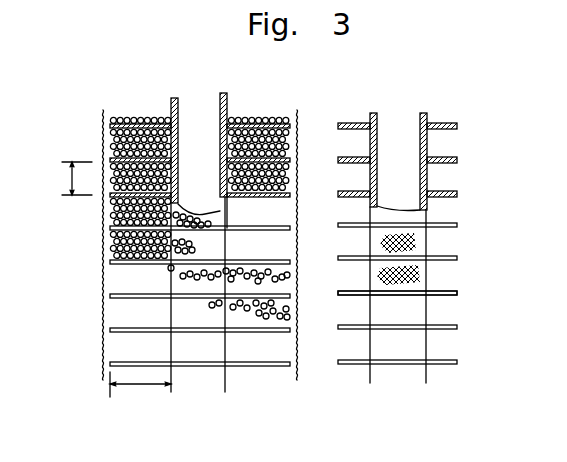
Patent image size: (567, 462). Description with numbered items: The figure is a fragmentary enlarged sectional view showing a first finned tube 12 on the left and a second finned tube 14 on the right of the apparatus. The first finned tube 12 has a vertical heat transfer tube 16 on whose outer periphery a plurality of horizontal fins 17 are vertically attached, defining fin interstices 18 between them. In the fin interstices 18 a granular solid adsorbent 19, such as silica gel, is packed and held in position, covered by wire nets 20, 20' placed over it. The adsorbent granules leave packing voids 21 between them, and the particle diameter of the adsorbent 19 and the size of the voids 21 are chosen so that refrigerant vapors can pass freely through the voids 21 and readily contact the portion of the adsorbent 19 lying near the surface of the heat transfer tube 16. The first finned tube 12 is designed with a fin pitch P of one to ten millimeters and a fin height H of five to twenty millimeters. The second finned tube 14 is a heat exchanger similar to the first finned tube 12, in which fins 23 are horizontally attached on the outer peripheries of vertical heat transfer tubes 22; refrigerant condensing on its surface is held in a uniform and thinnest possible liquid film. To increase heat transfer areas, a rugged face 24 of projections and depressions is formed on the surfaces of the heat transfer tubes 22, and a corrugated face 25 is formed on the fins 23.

The first finned tube 12 is at (93, 252).
The second finned tube 14 is at (460, 239).
The vertical heat transfer tube 16 is at (225, 100).
The horizontal fins 17 is at (127, 335).
The fin interstices 18 is at (132, 315).
The granular solid adsorbent 19 is at (110, 218).
The wire net 20 is at (119, 171).
The wire net 20' is at (284, 153).
The packing voids 21 is at (107, 260).
The vertical heat transfer tubes 22 is at (428, 113).
The fins 23 is at (438, 190).
The rugged face 24 is at (418, 275).
The corrugated face 25 is at (457, 297).
The pitch P is at (72, 177).
The height H is at (137, 386).